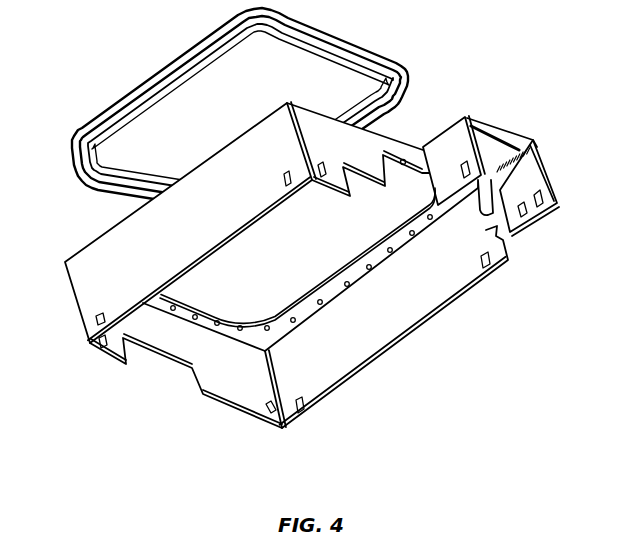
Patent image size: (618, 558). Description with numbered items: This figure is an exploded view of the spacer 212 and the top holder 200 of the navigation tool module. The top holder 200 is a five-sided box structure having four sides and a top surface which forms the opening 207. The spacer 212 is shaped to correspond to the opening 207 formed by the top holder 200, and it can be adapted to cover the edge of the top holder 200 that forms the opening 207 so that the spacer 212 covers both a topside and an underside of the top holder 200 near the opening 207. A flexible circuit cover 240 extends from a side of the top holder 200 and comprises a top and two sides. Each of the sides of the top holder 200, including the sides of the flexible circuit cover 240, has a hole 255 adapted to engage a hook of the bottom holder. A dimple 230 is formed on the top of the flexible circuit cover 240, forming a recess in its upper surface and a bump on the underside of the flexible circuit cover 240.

The top holder 200 is at (112, 250).
The opening 207 is at (331, 259).
The spacer 212 is at (128, 90).
The dimple 230 is at (510, 128).
The flexible circuit cover 240 is at (452, 143).
The hole 255 is at (97, 328).